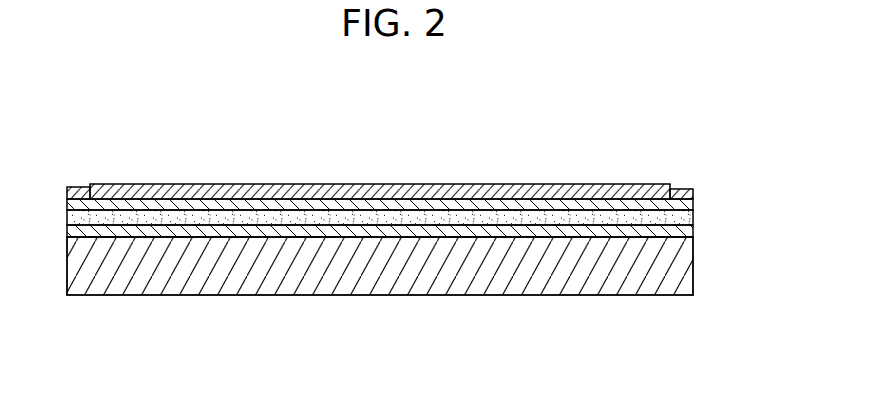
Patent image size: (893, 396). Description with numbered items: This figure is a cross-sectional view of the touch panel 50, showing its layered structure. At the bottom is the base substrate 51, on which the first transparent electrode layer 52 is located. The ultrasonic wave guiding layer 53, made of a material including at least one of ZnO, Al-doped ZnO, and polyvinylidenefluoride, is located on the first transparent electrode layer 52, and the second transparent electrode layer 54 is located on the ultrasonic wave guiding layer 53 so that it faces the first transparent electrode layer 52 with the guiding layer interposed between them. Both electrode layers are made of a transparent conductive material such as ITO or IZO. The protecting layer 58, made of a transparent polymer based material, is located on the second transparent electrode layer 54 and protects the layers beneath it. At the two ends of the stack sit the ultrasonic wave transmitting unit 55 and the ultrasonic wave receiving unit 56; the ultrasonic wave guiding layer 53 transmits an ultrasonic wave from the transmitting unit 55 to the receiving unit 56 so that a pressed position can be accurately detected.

The touch panel 50 is at (368, 110).
The base substrate 51 is at (450, 296).
The first transparent electrode layer 52 is at (693, 232).
The ultrasonic wave guiding layer 53 is at (693, 215).
The second transparent electrode layer 54 is at (693, 196).
The ultrasonic wave transmitting unit 55 is at (72, 186).
The ultrasonic wave receiving unit 56 is at (679, 188).
The protecting layer 58 is at (368, 192).